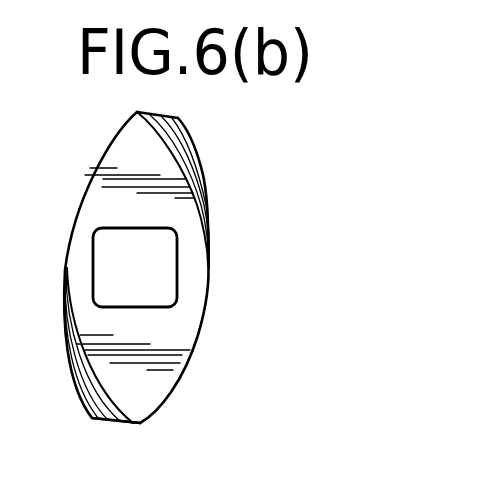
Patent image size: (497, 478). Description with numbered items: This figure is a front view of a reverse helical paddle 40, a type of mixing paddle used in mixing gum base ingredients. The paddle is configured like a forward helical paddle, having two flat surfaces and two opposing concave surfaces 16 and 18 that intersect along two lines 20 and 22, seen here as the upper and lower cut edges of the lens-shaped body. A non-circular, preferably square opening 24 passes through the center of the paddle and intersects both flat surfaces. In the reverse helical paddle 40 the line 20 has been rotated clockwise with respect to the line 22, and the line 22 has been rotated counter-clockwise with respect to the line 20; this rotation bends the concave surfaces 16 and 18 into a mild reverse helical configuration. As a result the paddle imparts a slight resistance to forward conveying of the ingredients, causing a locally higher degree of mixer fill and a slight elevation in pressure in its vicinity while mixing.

The concave surface 16 is at (80, 365).
The concave surface 18 is at (183, 143).
The line 20 is at (147, 113).
The line 22 is at (109, 425).
The non-circular opening 24 is at (152, 288).
The reverse helical paddle 40 is at (207, 178).